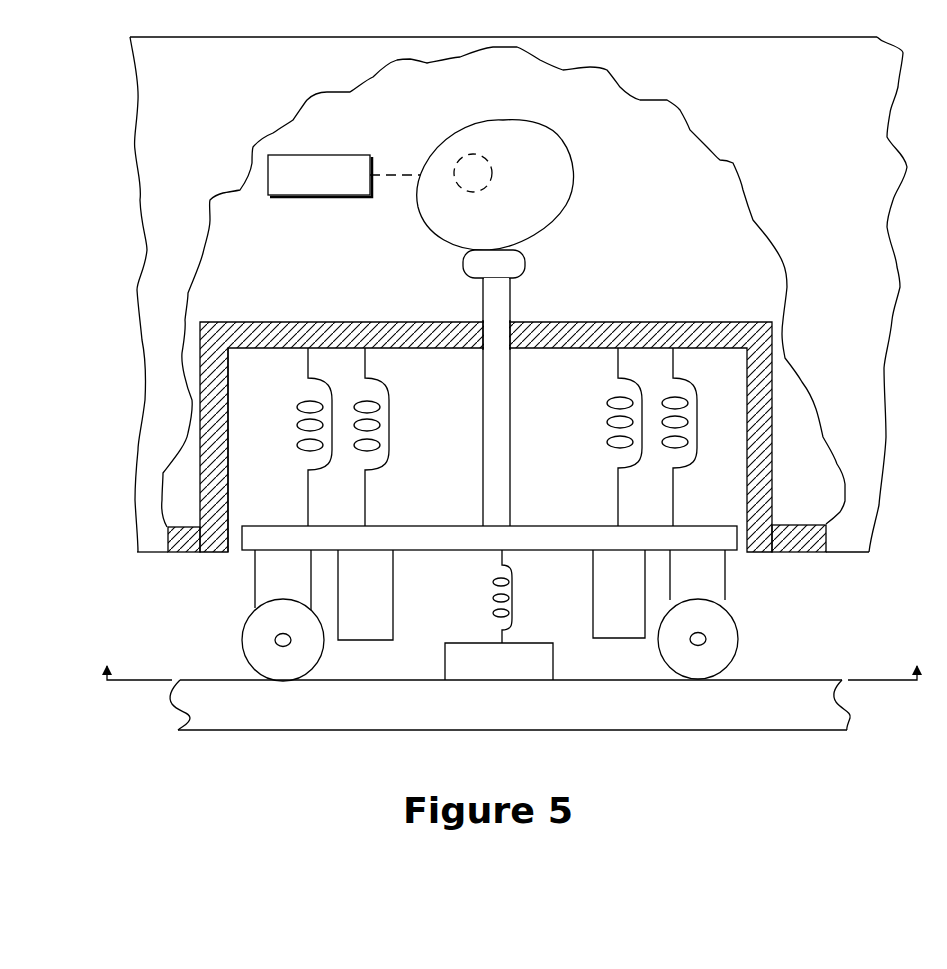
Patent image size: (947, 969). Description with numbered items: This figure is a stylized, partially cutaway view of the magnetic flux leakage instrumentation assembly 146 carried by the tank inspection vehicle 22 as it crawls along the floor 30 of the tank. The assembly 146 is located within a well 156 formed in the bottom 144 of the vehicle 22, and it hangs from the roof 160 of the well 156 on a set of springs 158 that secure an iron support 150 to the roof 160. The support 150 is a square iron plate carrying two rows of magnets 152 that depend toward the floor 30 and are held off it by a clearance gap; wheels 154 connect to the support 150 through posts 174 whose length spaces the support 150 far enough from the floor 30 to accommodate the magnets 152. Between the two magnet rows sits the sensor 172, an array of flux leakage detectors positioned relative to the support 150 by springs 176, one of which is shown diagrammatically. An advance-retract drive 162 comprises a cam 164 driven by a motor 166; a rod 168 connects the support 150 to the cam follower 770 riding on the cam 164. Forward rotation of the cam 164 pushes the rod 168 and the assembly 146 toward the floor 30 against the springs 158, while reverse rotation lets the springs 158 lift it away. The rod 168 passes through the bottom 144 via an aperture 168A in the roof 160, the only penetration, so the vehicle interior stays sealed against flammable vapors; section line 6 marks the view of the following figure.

The vehicle 22 is at (890, 100).
The motor 166 is at (372, 160).
The cam 164 is at (565, 148).
The advance-retract drive 162 is at (486, 323).
The cam follower head 770 is at (527, 268).
The rod 168 is at (511, 307).
The aperture 168A is at (592, 342).
The roof of the well 160 is at (486, 436).
The well 156 is at (228, 502).
The springs 158 is at (305, 472).
The bottom of the vehicle 144 is at (182, 553).
The iron support 150 is at (243, 553).
The magnets 152 is at (397, 581).
The posts 174 is at (253, 585).
The wheels 154 is at (736, 636).
The springs 176 is at (493, 600).
The sensor 172 is at (483, 643).
The floor 30 is at (217, 679).
The instrumentation assembly 146 is at (552, 603).
The section line 6- 6 is at (511, 651).